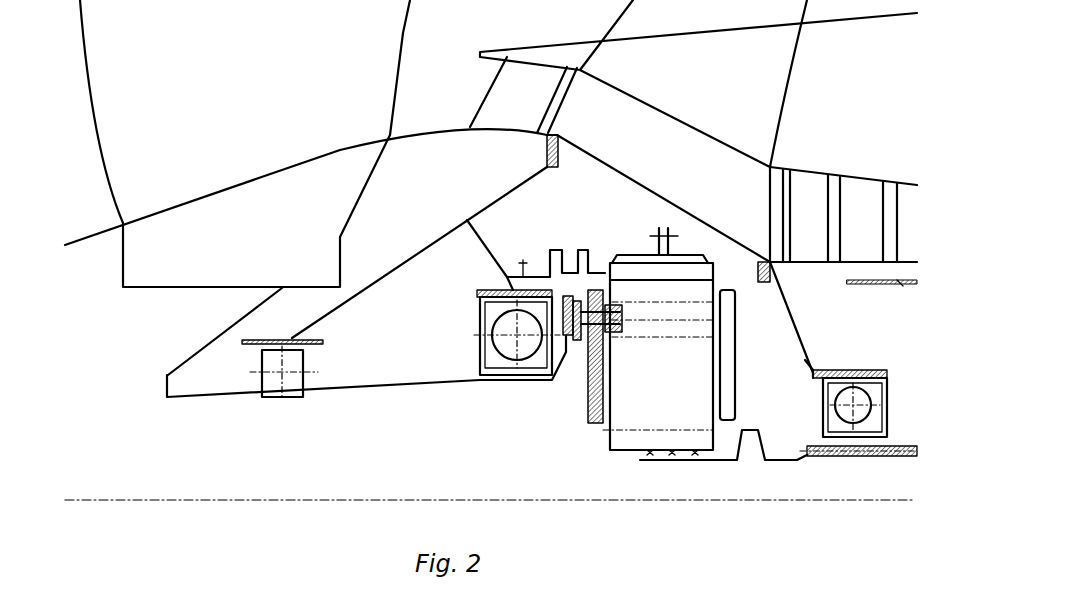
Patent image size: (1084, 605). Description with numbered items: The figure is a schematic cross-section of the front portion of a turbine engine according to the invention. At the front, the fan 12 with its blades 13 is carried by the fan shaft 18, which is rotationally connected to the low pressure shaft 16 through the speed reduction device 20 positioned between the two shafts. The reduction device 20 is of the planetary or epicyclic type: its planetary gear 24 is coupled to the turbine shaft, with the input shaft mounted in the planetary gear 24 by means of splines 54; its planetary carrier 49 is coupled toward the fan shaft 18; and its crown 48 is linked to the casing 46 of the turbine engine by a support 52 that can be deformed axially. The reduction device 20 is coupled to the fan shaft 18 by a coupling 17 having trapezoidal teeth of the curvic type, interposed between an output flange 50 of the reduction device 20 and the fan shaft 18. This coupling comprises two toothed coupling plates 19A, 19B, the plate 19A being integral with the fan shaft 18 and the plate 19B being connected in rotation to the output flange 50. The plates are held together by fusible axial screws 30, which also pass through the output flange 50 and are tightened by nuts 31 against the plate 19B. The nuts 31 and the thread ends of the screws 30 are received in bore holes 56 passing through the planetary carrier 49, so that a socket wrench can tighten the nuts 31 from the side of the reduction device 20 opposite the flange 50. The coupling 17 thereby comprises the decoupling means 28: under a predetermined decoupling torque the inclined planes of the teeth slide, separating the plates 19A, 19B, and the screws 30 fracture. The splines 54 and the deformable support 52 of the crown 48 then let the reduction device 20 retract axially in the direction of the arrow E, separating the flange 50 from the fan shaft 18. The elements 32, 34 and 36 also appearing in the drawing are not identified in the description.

The blades 13 is at (498, 143).
The fan 12 is at (148, 306).
The fan shaft 18 is at (188, 404).
The lower fastening block 32 is at (268, 388).
The fastening block with bore 34 is at (500, 347).
The casing 46 is at (470, 222).
The support 52 is at (555, 268).
The toothed coupling plate 19B is at (587, 300).
The toothed coupling plate 19A is at (573, 340).
The decoupling means 28 is at (567, 380).
The fusible axial screws 30 is at (608, 305).
The arrow E is at (613, 250).
The bore holes 56 is at (667, 332).
The crown 48 is at (690, 250).
The nuts 31 is at (620, 310).
The planetary carrier 49 is at (688, 322).
The planetary gear 24 is at (640, 462).
The coupling 17 is at (580, 352).
The output flange 50 is at (597, 415).
The splines 54 is at (657, 463).
The reduction device 20 is at (677, 468).
The low pressure shaft 16 is at (840, 457).
The rear fastening block 36 is at (863, 413).